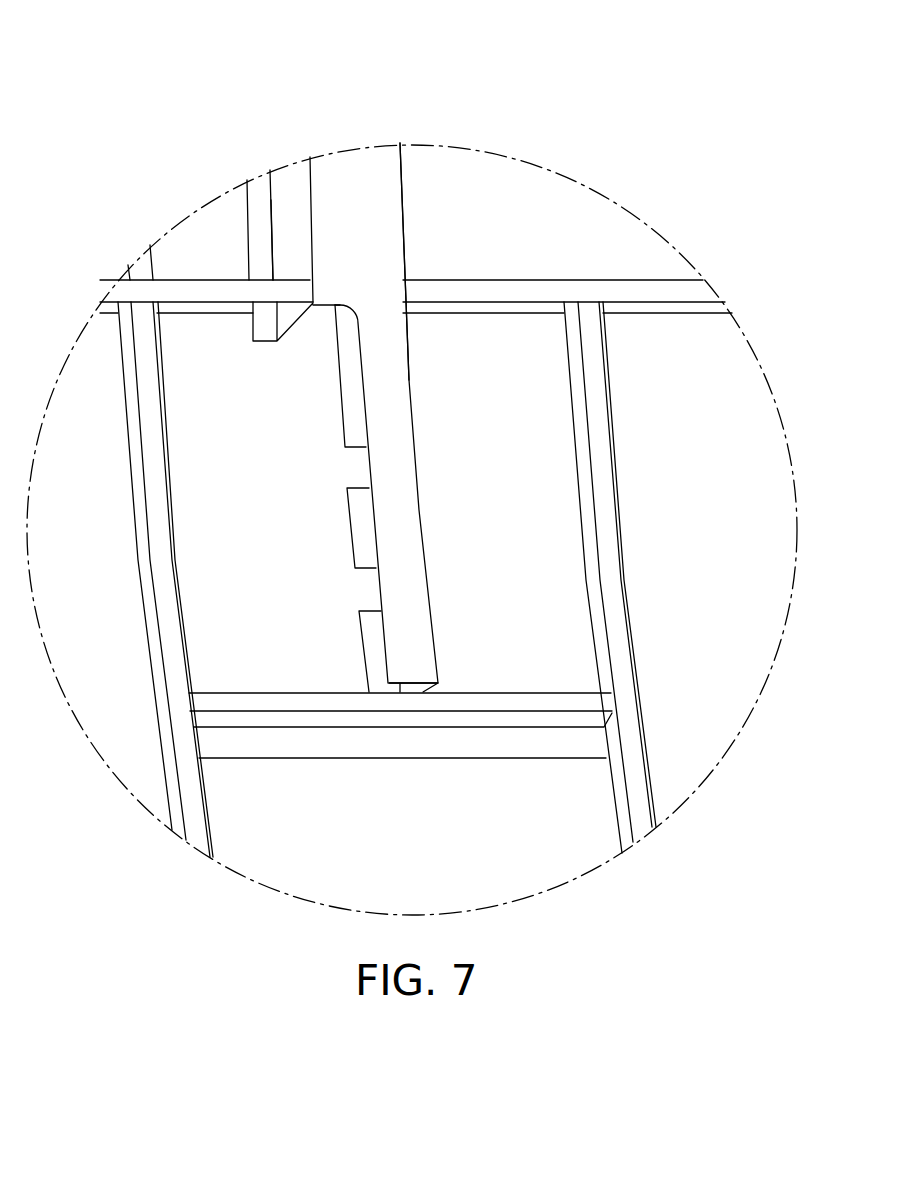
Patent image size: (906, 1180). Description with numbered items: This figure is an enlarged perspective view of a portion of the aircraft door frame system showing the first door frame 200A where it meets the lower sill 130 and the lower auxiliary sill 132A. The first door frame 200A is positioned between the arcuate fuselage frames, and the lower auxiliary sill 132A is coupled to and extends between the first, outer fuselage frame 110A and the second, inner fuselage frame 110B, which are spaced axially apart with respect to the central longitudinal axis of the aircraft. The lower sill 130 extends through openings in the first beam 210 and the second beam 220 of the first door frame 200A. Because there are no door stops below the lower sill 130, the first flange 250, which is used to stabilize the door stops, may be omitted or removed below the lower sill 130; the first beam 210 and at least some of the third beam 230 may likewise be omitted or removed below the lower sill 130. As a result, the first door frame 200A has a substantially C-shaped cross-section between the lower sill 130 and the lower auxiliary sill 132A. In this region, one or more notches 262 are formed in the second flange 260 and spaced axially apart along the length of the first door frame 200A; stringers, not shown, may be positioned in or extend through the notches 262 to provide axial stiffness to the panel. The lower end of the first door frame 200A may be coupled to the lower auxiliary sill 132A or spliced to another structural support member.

The lower sill 130 is at (675, 295).
The lower auxiliary sill 132A is at (542, 740).
The first, outer fuselage frame 110A is at (140, 455).
The second, inner fuselage frame 110B is at (602, 480).
The first flange 250 is at (260, 228).
The first beam 210 is at (290, 198).
The third beam 230 is at (355, 208).
The first door frame 200A is at (428, 233).
The second flange 260 is at (350, 388).
The notches 262 is at (356, 467).
The second beam 220 is at (423, 690).